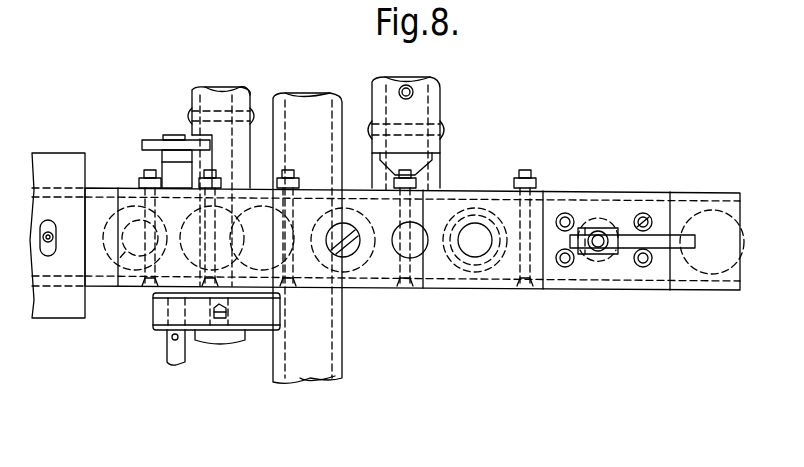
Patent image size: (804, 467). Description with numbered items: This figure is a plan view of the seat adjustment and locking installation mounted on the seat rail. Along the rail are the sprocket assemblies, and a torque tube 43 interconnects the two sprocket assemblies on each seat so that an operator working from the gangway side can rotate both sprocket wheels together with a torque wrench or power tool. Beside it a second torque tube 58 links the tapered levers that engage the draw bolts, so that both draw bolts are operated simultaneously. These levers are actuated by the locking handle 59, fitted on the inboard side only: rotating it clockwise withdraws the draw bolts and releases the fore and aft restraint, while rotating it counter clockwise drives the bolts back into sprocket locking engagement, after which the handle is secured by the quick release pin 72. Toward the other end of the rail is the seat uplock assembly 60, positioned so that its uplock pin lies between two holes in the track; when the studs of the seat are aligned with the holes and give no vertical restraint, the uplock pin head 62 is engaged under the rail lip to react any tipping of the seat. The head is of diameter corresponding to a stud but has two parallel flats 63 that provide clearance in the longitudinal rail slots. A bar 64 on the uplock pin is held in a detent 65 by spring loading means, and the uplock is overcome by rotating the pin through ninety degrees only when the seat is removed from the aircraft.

The torque tube 43 is at (420, 105).
The torque tube 58 is at (216, 90).
The locking handle 59 is at (195, 292).
The seat uplock assembly 60 is at (599, 253).
The uplock pin head 62 is at (586, 256).
The parallel flats 63 is at (565, 270).
The bar 64 is at (697, 250).
The detent 65 is at (645, 221).
The quick release pin 72 is at (172, 364).